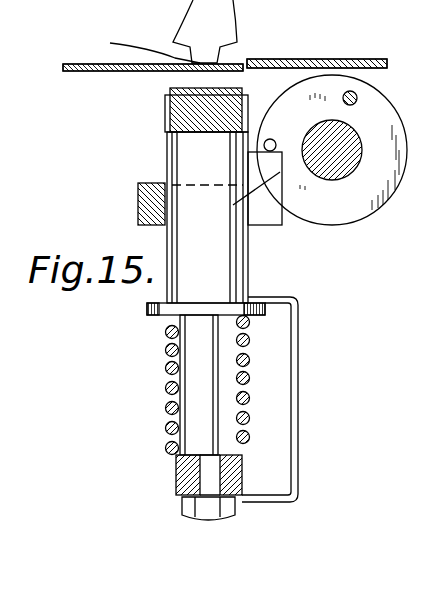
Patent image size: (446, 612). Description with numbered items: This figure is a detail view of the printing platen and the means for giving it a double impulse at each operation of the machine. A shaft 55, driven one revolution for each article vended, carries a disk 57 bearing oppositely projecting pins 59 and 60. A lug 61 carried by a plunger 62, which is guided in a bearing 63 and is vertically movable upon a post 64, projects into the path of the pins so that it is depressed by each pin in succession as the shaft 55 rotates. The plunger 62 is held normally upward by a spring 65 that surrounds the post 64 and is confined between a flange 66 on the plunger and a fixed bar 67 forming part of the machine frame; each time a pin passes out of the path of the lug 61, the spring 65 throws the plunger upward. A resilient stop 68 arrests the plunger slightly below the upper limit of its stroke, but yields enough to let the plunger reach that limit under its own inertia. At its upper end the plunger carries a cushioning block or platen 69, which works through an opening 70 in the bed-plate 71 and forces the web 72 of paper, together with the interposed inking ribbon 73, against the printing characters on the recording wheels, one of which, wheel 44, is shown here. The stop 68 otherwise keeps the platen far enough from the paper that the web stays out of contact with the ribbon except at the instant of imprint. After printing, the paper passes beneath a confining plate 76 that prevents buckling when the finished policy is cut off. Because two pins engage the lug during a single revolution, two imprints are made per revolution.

The recording wheel 44 is at (205, 31).
The shaft 55 is at (332, 170).
The disk 57 is at (385, 120).
The pin 59 is at (272, 139).
The pin 60 is at (357, 95).
The lug 61 is at (276, 175).
The plunger 62 is at (207, 217).
The bearing 63 is at (145, 189).
The post 64 is at (190, 340).
The spring 65 is at (170, 372).
The flange 66 is at (147, 309).
The fixed bar 67 is at (182, 476).
The resilient stop 68 is at (298, 330).
The cushioning block or platen 69 is at (186, 115).
The opening 70 is at (176, 73).
The bed-plate 71 is at (386, 67).
The web of paper 72 is at (108, 73).
The inking ribbon 73 is at (143, 47).
The confining plate 76 is at (360, 60).